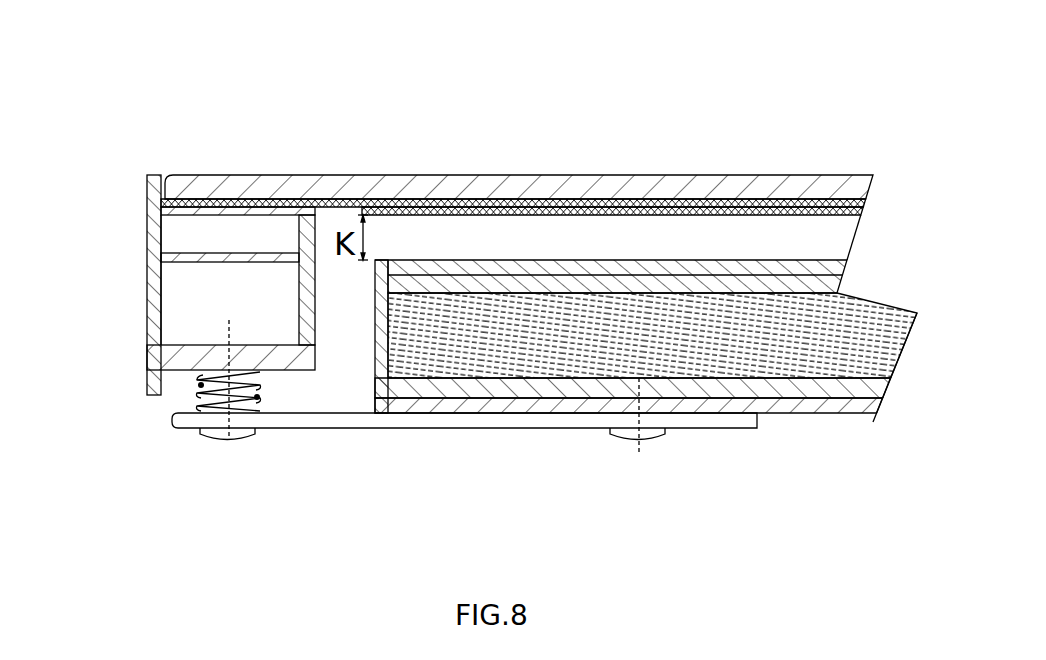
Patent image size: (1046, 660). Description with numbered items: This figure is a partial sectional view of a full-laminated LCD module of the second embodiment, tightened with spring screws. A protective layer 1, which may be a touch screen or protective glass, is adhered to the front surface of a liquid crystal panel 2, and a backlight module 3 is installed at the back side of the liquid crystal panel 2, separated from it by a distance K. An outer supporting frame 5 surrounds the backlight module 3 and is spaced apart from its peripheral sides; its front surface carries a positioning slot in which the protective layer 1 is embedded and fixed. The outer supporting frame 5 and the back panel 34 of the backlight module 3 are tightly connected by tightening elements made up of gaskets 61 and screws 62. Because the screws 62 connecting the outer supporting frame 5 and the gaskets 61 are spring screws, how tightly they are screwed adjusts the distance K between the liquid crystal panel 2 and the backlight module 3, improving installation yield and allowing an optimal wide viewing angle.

The protective layer 1 is at (596, 196).
The liquid crystal panel 2 is at (745, 205).
The backlight module 3 is at (803, 258).
The outer supporting frame 5 is at (143, 310).
The back panel 34 is at (792, 403).
The gasket 61 is at (293, 430).
The screw 62 is at (212, 383).